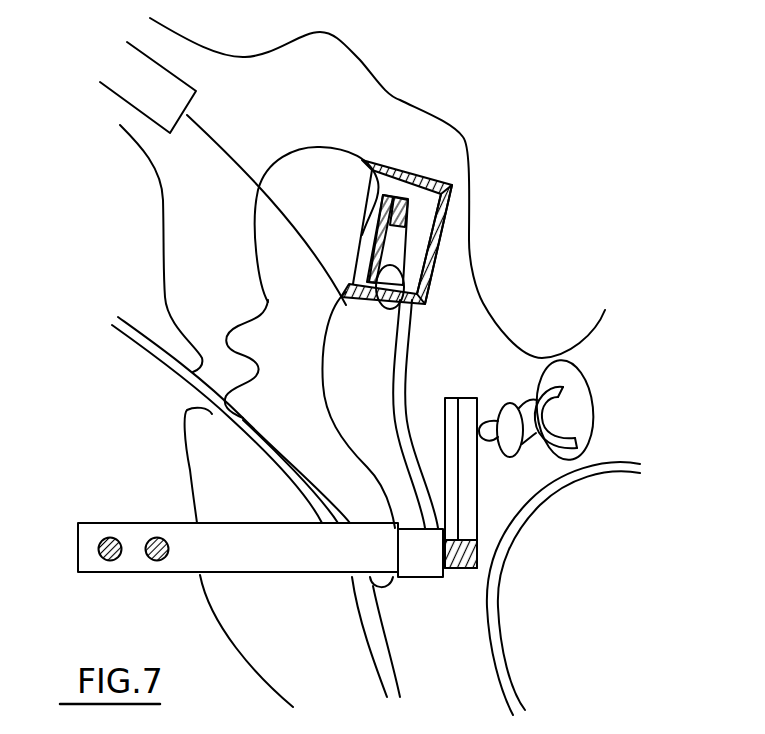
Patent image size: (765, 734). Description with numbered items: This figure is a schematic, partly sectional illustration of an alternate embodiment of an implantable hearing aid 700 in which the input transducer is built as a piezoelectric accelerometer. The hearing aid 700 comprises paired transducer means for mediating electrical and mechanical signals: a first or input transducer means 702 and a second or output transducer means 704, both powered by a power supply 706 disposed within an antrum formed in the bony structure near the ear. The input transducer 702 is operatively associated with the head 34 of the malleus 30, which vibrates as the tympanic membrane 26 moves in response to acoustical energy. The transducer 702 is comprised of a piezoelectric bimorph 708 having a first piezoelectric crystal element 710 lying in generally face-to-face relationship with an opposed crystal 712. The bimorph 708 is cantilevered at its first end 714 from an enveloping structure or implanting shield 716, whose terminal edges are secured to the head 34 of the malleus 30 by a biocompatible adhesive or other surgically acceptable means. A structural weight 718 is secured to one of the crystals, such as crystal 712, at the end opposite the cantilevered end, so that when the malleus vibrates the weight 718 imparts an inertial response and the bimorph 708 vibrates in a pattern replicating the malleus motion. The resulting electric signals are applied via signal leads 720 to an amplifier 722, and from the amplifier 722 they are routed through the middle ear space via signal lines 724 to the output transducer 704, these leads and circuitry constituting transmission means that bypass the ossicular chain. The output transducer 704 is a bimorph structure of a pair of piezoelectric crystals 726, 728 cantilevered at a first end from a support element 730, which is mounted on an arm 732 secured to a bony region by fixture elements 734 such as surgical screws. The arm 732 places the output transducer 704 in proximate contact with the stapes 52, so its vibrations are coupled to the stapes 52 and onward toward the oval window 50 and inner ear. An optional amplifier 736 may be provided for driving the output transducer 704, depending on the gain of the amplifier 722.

The implantable hearing aid 700 is at (485, 365).
The power supply 706 is at (165, 99).
The malleus 30 is at (262, 233).
The head of the malleus 34 is at (333, 193).
The input transducer means 702 is at (468, 198).
The amplifier 722 is at (432, 216).
The opposed crystal 712 is at (372, 238).
The piezoelectric bimorph 708 is at (364, 238).
The first piezoelectric crystal element 710 is at (378, 232).
The structural weight 718 is at (387, 312).
The signal leads 720 is at (382, 312).
The first end of the bimorph 714 is at (360, 292).
The implanting shield 716 is at (424, 296).
The signal lines 724 is at (404, 384).
The piezoelectric crystal 726 is at (478, 473).
The piezoelectric crystal 728 is at (444, 401).
The support element 730 is at (470, 569).
The optional amplifier 736 is at (420, 578).
The arm 732 is at (262, 573).
The fixture elements 734 is at (153, 537).
The tympanic membrane 26 is at (318, 662).
The output transducer means 704 is at (482, 503).
The oval window 50 is at (588, 458).
The stapes 52 is at (537, 406).